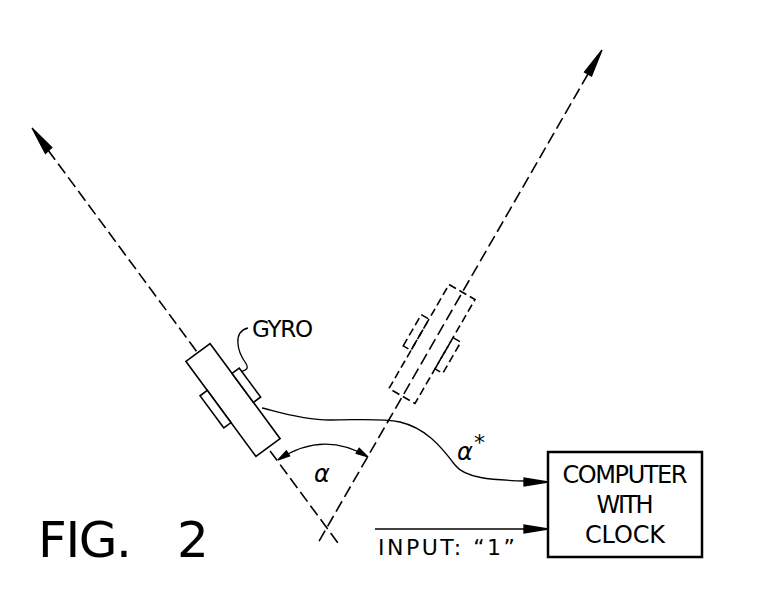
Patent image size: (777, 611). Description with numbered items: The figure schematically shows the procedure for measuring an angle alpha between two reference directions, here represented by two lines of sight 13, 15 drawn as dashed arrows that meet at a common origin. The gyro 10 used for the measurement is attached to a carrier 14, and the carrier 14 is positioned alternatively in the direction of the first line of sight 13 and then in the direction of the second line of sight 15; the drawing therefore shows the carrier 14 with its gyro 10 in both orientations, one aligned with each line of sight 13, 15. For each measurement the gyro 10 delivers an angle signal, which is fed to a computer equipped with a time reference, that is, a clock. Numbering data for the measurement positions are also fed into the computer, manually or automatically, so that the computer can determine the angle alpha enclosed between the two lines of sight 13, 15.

The gyro 10 is at (256, 384).
The line of sight 13 is at (108, 232).
The carrier 14 is at (198, 368).
The line of sight 15 is at (540, 157).